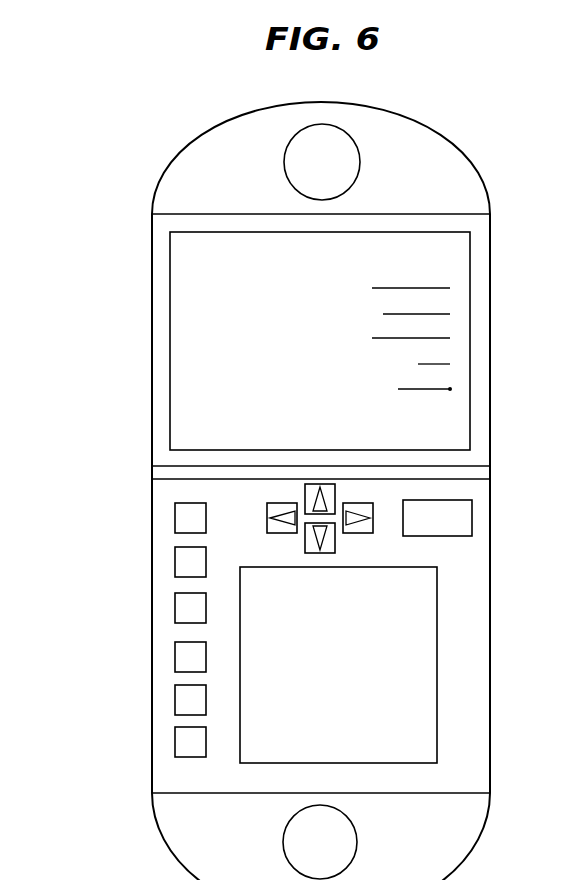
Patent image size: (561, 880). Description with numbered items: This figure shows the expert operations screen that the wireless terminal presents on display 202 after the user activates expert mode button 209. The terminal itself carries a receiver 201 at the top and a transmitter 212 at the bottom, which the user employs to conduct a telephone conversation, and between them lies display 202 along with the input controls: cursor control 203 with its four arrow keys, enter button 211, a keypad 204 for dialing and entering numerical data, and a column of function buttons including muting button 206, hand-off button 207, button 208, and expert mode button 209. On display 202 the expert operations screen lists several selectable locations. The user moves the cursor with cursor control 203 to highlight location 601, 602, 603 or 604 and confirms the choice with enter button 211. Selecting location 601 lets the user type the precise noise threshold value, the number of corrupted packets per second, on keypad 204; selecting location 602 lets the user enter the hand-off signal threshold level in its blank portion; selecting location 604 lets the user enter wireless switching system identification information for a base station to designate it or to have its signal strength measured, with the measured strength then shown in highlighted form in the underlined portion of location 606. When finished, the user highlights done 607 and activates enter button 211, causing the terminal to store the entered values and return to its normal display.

The receiver 201 is at (336, 141).
The display 202 is at (470, 291).
The cursor control 203 is at (345, 538).
The keypad 204 is at (430, 707).
The muting button 206 is at (178, 518).
The hand-off button 207 is at (178, 557).
The button 208 is at (178, 608).
The expert mode button 209 is at (183, 655).
The enter button 211 is at (472, 517).
The transmitter 212 is at (352, 834).
The noise threshold location 601 is at (214, 282).
The hand-off signal threshold location 602 is at (213, 302).
The base station ID location 603 is at (213, 329).
The base station signal location 604 is at (213, 355).
The signal strength location 606 is at (238, 380).
The done 607 is at (300, 440).